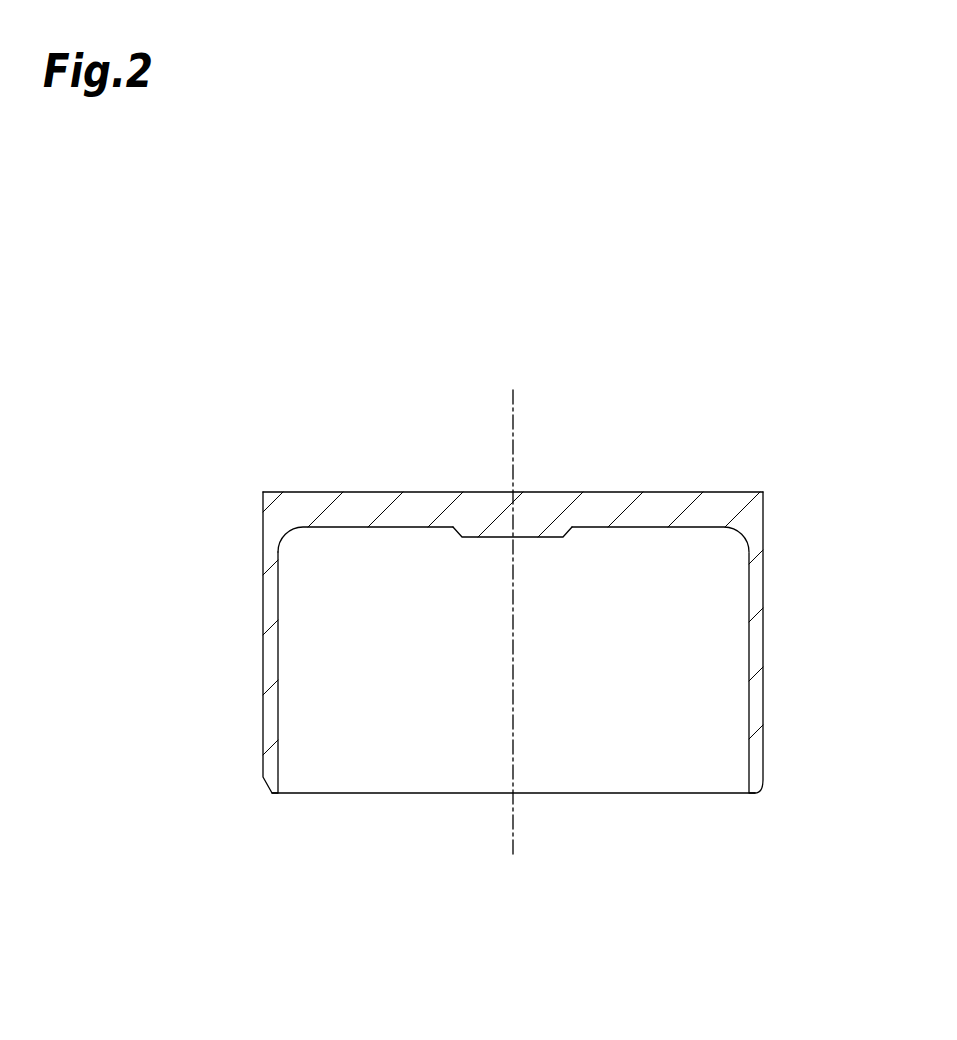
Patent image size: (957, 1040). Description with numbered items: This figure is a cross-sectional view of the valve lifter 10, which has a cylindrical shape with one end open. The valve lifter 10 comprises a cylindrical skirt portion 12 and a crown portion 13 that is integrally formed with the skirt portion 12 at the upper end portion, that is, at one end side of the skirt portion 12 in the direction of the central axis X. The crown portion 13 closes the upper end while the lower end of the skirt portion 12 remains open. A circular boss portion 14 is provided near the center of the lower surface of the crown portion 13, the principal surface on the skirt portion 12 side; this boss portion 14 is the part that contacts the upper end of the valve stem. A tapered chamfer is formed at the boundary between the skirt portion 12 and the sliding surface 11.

The valve lifter 10 is at (482, 584).
The sliding surface 11 is at (602, 492).
The skirt portion 12 is at (263, 605).
The crown portion 13 is at (337, 492).
The boss portion 14 is at (470, 537).